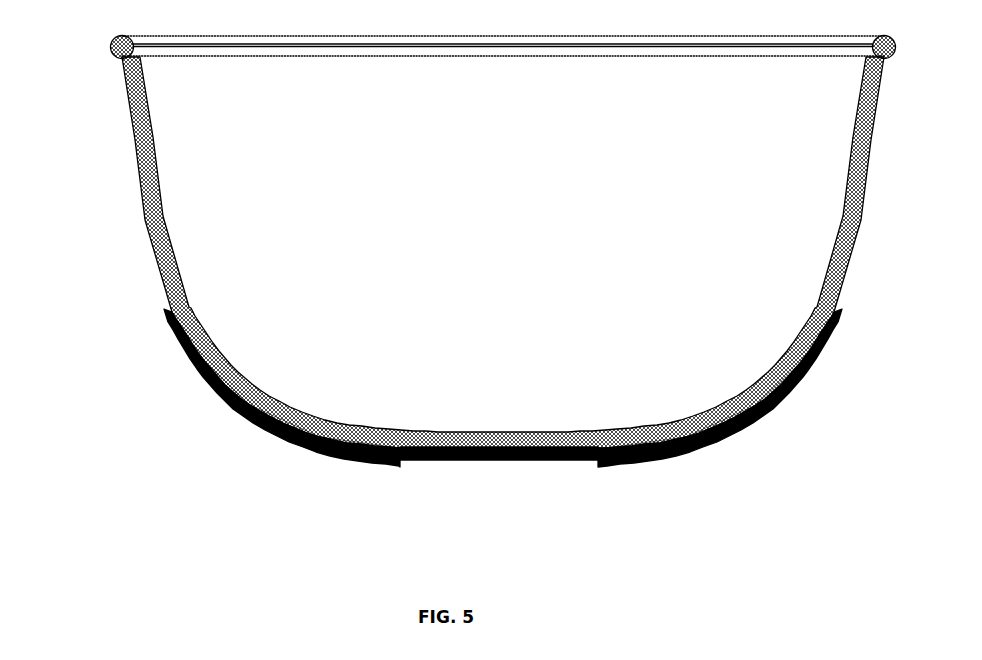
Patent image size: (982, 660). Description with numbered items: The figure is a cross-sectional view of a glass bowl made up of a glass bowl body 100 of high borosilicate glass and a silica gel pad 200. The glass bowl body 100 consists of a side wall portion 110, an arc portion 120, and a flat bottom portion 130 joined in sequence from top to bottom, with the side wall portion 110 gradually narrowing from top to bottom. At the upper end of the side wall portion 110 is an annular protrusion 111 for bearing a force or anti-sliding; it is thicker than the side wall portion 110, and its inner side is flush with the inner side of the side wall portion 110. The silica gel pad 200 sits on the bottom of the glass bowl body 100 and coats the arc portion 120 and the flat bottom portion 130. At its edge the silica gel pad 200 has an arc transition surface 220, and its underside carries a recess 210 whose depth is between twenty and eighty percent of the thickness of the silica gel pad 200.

The glass bowl body 100 is at (305, 170).
The side wall portion 110 is at (164, 220).
The annular protrusion 111 is at (110, 52).
The arc portion 120 is at (268, 383).
The flat bottom portion 130 is at (475, 431).
The silica gel pad 200 is at (253, 408).
The arc transition surface 220 is at (172, 317).
The recess 210 is at (435, 470).